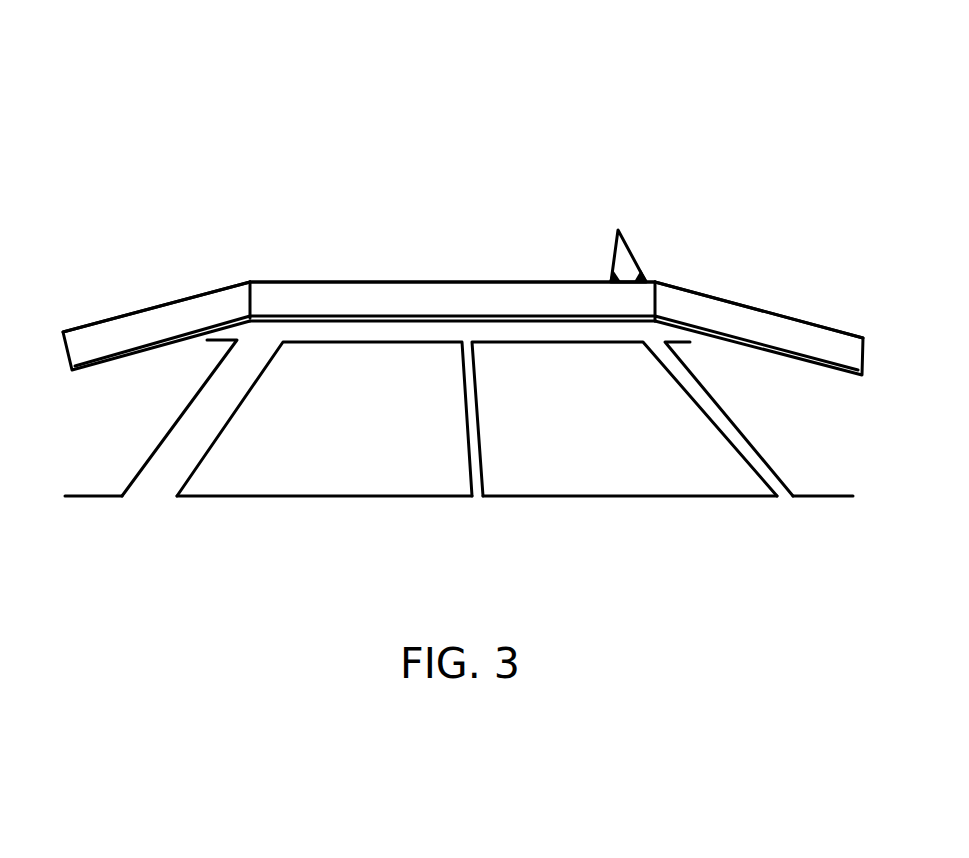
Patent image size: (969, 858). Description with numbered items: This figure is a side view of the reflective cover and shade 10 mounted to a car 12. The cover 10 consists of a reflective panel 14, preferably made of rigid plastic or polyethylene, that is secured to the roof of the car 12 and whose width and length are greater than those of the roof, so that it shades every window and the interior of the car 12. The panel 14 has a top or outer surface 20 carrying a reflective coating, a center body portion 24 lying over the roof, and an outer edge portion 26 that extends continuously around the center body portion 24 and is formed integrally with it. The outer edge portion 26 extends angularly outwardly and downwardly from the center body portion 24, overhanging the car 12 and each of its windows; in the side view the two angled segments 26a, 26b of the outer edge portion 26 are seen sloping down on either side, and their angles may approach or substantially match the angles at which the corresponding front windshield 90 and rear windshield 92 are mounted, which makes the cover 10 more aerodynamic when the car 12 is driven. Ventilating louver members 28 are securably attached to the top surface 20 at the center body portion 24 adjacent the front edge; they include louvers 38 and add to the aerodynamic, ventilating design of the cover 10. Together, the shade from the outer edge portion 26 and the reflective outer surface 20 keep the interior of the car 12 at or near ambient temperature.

The reflective cover and shade 10 is at (563, 255).
The car 12 is at (157, 442).
The reflective panel 14 is at (465, 280).
The top or outer surface 20 is at (202, 292).
The center body portion 24 is at (355, 280).
The outer edge portion 26 is at (825, 347).
The segment of outer edge portion 26a is at (743, 303).
The segment of outer edge portion 26b is at (108, 318).
The ventilating louver member 28 is at (643, 267).
The louver 38 is at (613, 275).
The front windshield 90 is at (698, 383).
The rear windshield 92 is at (200, 390).